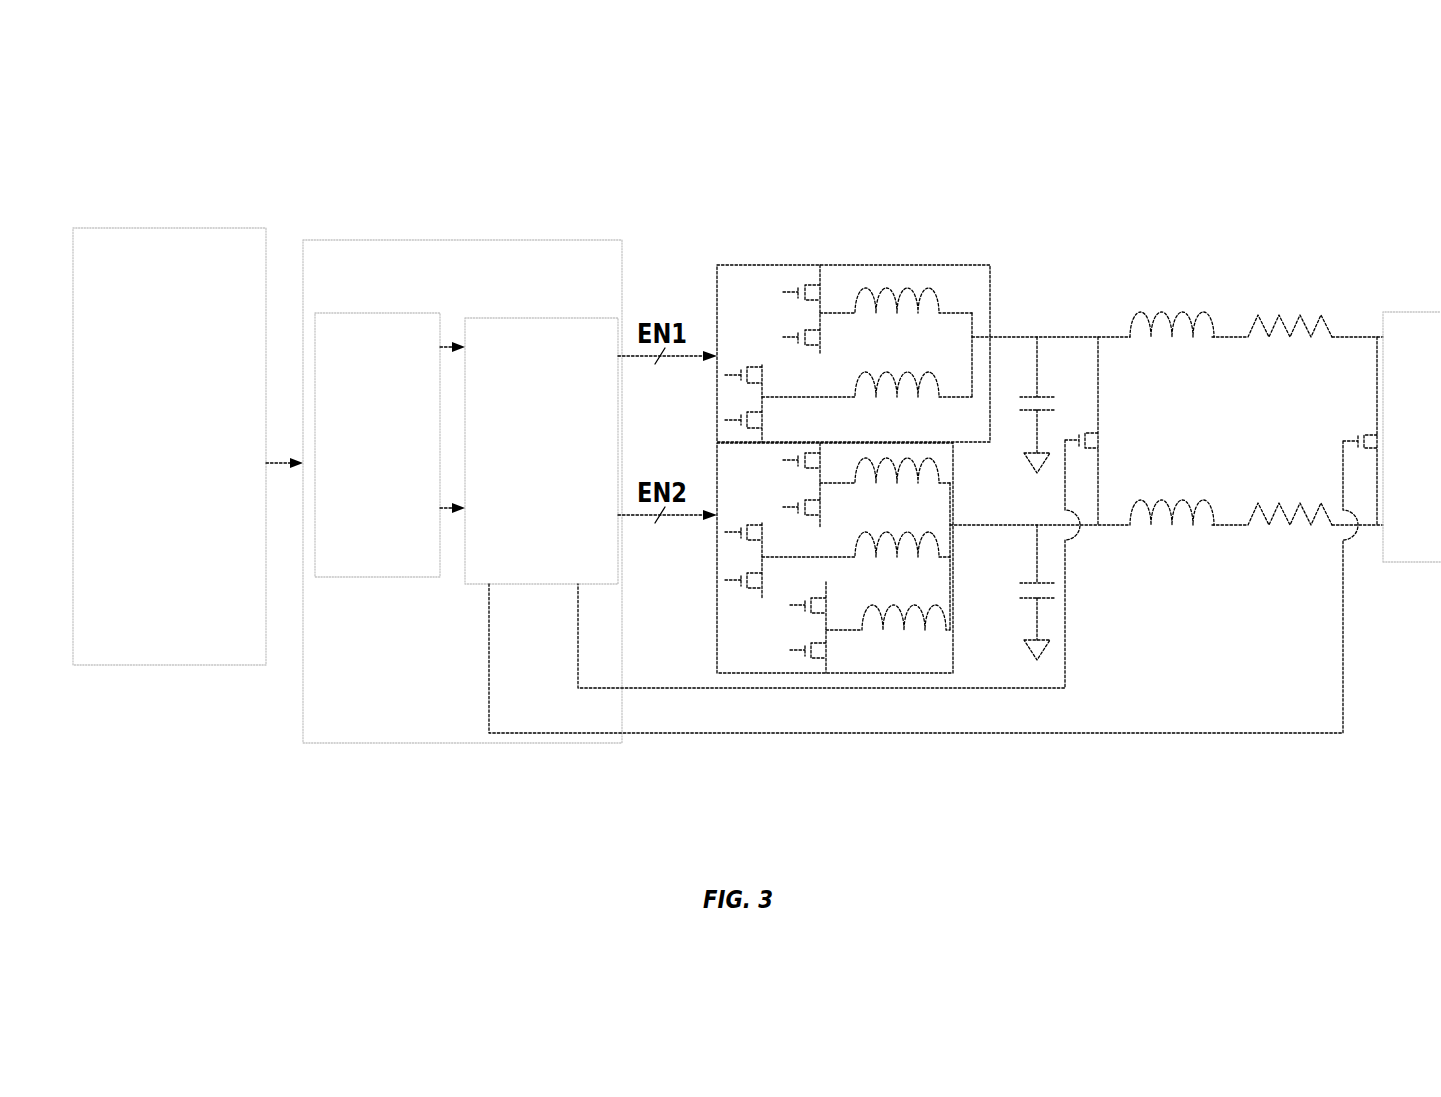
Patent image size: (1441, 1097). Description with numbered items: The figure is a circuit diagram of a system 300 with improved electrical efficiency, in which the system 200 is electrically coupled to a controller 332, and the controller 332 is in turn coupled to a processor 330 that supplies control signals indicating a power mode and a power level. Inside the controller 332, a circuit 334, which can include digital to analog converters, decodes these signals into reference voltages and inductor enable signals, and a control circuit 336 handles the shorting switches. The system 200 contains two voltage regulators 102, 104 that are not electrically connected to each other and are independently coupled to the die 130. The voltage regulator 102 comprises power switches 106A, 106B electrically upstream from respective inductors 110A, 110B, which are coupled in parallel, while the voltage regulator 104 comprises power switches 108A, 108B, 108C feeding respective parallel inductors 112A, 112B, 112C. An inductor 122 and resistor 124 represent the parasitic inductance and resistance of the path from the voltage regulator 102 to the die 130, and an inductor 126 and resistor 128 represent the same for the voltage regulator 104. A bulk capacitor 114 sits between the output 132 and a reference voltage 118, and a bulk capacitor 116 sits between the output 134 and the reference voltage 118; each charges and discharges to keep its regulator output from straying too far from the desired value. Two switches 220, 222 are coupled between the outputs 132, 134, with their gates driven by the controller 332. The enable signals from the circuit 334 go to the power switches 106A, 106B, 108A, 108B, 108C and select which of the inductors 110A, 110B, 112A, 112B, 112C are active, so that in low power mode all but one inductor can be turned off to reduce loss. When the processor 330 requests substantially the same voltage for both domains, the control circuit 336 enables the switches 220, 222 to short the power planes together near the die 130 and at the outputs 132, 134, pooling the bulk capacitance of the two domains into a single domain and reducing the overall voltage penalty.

The system 300 is at (182, 41).
The system 200 is at (842, 216).
The processor 330 is at (197, 226).
The controller 332 is at (500, 241).
The circuit 334 is at (415, 315).
The control circuit 336 is at (560, 320).
The voltage regulator 102 is at (715, 290).
The voltage regulator 104 is at (715, 481).
The power switch 106A is at (766, 314).
The power switch 106B is at (708, 396).
The power switch 108A is at (768, 484).
The power switch 108B is at (708, 559).
The power switch 108C is at (774, 632).
The inductor 110A is at (930, 300).
The inductor 110B is at (930, 378).
The inductor 112A is at (895, 466).
The inductor 112B is at (928, 541).
The inductor 112C is at (940, 609).
The bulk capacitor 114 is at (1038, 393).
The bulk capacitor 116 is at (1037, 585).
The reference voltage 118 is at (1035, 465).
The inductor 122 is at (1160, 318).
The resistor 124 is at (1282, 318).
The inductor 126 is at (1203, 505).
The resistor 128 is at (1318, 505).
The die 130 is at (1425, 312).
The output 132 is at (1092, 338).
The output 134 is at (1052, 526).
The switch 220 is at (1099, 424).
The switch 222 is at (1370, 436).